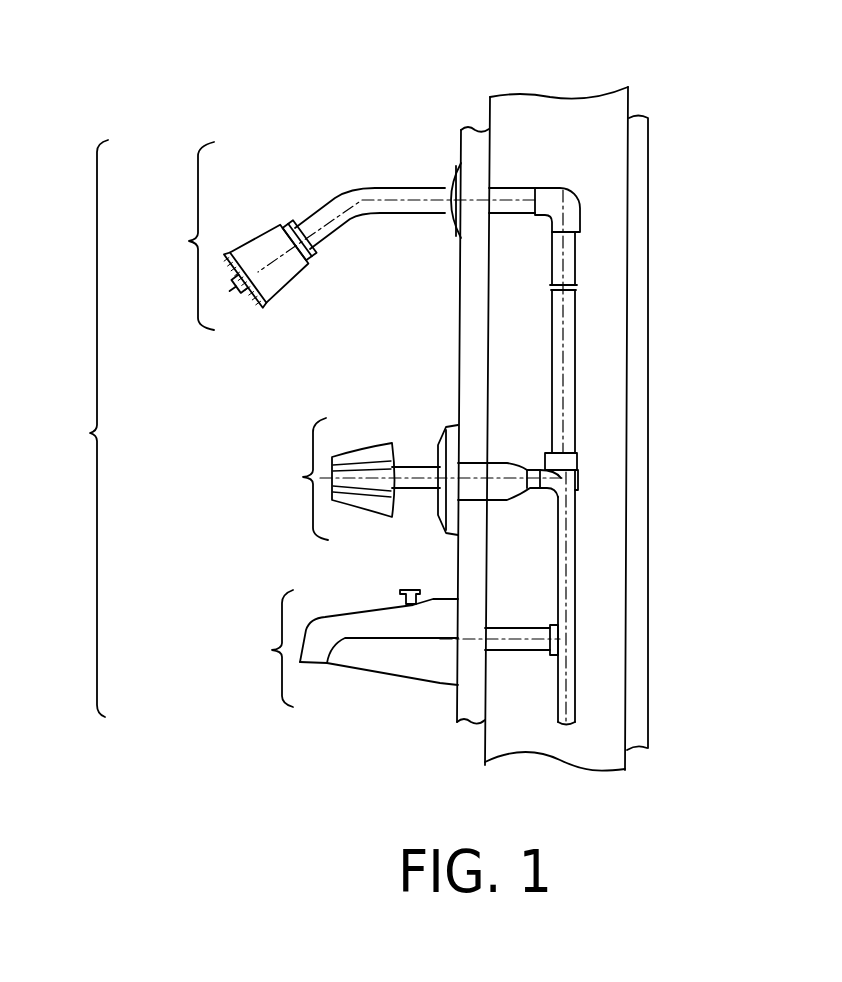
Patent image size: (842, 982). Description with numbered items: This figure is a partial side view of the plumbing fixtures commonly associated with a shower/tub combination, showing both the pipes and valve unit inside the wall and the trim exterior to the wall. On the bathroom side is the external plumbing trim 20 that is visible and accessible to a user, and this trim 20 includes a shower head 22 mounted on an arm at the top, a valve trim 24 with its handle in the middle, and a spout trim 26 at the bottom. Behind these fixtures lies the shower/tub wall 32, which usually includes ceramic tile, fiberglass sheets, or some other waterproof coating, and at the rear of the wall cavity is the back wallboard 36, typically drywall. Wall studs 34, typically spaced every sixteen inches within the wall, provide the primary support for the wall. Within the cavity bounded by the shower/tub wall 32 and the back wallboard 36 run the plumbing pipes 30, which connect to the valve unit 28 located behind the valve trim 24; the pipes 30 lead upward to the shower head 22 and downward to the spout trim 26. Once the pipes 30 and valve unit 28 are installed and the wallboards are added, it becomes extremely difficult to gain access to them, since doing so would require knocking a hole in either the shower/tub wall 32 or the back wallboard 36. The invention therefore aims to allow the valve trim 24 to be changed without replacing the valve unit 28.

The external plumbing trim 20 is at (90, 433).
The shower head 22 is at (189, 241).
The valve trim 24 is at (303, 477).
The spout trim 26 is at (272, 650).
The valve unit 28 is at (541, 498).
The plumbing pipes 30 is at (550, 348).
The shower/tub wall 32 is at (461, 142).
The wall stud 34 is at (553, 97).
The back wallboard 36 is at (648, 142).